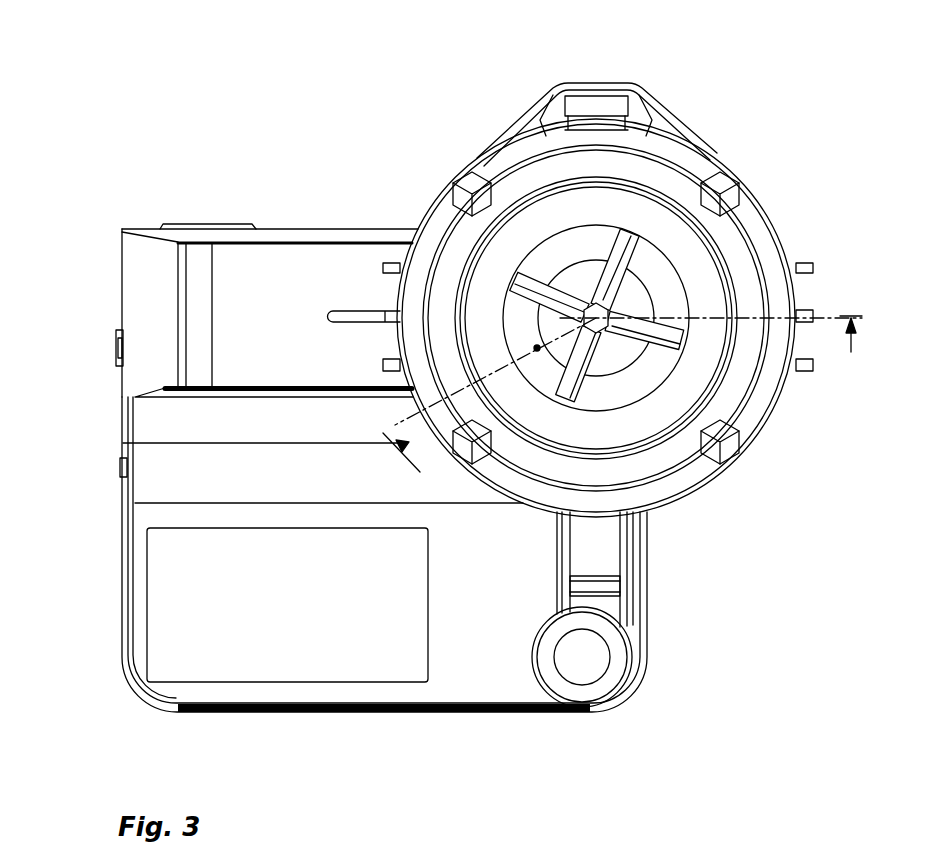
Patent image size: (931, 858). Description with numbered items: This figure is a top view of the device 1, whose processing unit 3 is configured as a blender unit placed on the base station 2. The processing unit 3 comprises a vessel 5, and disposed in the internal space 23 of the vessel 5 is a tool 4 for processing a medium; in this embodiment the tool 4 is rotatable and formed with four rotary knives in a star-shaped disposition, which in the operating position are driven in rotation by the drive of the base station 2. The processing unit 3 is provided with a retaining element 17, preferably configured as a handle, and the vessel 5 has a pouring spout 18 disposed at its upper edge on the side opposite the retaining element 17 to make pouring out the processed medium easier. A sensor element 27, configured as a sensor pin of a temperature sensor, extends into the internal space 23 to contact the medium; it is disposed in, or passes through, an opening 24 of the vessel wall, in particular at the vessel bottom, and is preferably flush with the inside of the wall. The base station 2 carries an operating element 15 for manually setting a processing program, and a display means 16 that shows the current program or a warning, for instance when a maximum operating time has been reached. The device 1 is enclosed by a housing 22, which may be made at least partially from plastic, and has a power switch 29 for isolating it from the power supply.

The device 1 is at (268, 160).
The base station 2 is at (125, 222).
The processing unit 3 is at (692, 137).
The tool 4 is at (543, 288).
The vessel 5 is at (660, 410).
The operating element 15 is at (580, 660).
The display means 16 is at (332, 656).
The retaining element 17 is at (605, 555).
The pouring spout 18 is at (596, 88).
The housing 22 is at (503, 714).
The internal space 23 is at (453, 240).
The opening 24 is at (532, 337).
The sensor element 27 is at (537, 348).
The power switch 29 is at (116, 349).